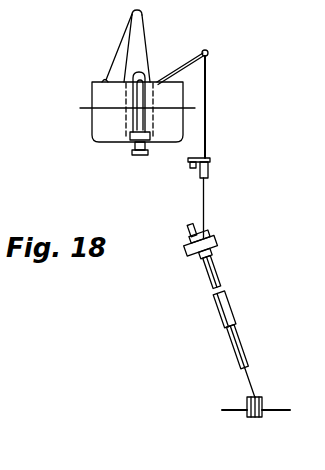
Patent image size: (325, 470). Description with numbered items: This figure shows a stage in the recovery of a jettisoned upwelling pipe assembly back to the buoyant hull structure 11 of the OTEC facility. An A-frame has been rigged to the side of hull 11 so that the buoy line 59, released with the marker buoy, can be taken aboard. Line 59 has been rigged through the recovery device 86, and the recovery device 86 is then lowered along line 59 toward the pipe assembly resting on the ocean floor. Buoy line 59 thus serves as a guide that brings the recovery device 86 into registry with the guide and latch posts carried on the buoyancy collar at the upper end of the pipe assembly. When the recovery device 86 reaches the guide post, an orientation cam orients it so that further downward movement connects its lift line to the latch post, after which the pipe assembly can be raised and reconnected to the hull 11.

The buoyant hull structure 11 is at (97, 130).
The buoy line 59 is at (206, 78).
The recovery device 86 is at (209, 157).